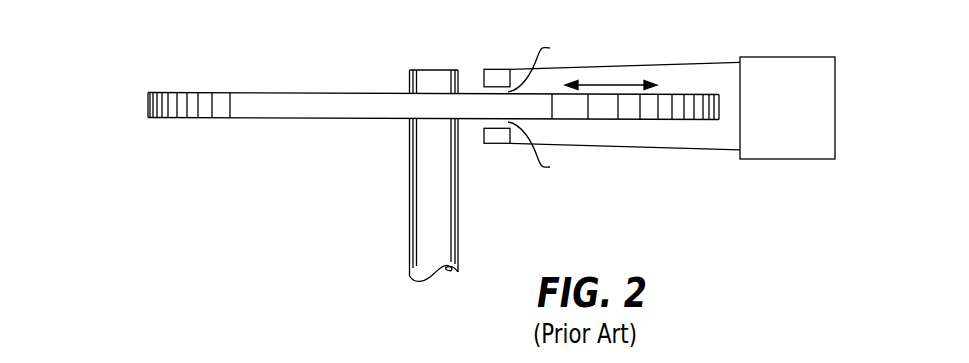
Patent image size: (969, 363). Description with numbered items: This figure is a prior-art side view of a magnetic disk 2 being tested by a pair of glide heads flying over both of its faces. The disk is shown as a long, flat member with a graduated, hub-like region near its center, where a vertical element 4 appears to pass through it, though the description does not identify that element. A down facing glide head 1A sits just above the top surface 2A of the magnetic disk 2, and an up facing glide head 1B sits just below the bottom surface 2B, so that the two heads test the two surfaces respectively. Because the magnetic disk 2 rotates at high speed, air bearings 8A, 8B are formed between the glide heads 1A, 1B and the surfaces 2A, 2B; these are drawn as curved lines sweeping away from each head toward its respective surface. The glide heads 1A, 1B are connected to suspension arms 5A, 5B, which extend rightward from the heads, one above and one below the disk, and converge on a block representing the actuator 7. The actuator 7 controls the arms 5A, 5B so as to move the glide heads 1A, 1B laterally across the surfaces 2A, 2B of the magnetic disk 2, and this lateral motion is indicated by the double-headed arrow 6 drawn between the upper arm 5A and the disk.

The magnetic disk 2 is at (148, 108).
The surface of magnetic disk 2A is at (261, 92).
The surface of magnetic disk 2B is at (276, 122).
The cylindrical guide member 4 is at (432, 68).
The down facing glide head 1A is at (493, 68).
The up facing glide head 1B is at (497, 146).
The suspension arm 5A is at (676, 63).
The suspension arm 5B is at (672, 151).
The arrow 6 is at (612, 82).
The actuator 7 is at (837, 133).
The air bearing 8A is at (540, 60).
The air bearing 8B is at (539, 156).